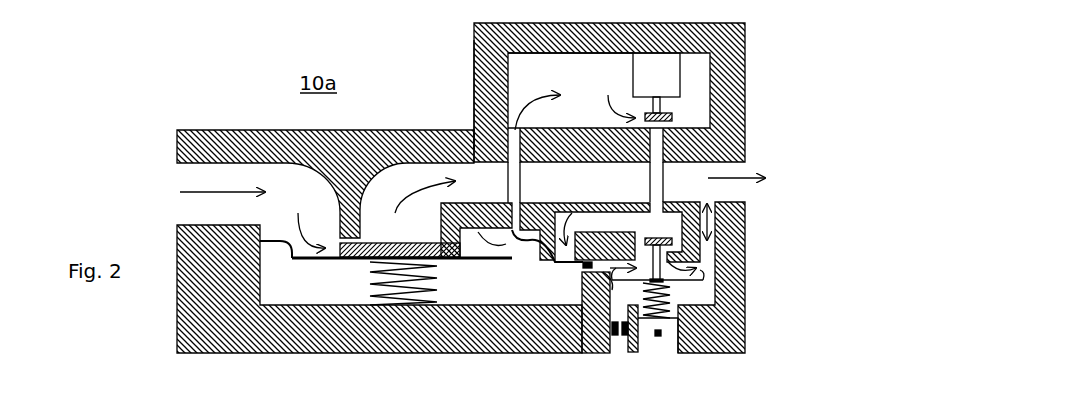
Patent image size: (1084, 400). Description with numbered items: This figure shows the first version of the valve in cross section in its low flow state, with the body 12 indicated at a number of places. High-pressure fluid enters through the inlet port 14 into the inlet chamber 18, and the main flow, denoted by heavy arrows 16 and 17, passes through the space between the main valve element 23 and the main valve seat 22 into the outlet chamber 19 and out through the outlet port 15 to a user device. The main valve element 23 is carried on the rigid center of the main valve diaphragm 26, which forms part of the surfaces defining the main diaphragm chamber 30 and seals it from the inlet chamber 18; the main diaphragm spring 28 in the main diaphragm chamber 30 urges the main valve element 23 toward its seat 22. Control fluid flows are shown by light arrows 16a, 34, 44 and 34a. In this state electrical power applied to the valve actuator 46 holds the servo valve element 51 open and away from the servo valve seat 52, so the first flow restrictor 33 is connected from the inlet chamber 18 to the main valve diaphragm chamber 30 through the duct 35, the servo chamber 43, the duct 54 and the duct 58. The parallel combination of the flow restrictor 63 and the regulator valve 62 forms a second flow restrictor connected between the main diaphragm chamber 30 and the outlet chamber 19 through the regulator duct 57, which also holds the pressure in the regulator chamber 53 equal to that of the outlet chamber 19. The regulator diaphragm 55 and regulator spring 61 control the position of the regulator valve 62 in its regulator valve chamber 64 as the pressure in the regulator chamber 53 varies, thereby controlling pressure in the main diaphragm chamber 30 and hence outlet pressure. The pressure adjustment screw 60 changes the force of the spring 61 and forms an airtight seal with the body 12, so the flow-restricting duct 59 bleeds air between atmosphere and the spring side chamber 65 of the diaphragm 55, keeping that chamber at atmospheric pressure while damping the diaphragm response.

The body 12 is at (283, 137).
The inlet port 14 is at (183, 184).
The outlet port 15 is at (740, 193).
The heavy arrow 16 is at (200, 193).
The light arrow 16a is at (500, 252).
The heavy arrow 17 is at (410, 200).
The inlet chamber 18 is at (275, 173).
The outlet chamber 19 is at (410, 172).
The main valve seat 22 is at (440, 246).
The main valve element 23 is at (443, 262).
The main valve diaphragm 26 is at (475, 258).
The main diaphragm spring 28 is at (368, 277).
The main diaphragm chamber 30 is at (290, 300).
The first flow restrictor 33 is at (528, 210).
The flow symbol 34 is at (480, 56).
The flow symbol 34a is at (575, 211).
The duct 35 is at (507, 188).
The servo chamber 43 is at (585, 75).
The flow symbol 44 is at (605, 106).
The valve actuator 46 is at (665, 72).
The servo valve element 51 is at (668, 117).
The servo valve seat 52 is at (660, 128).
The regulator chamber 53 is at (733, 288).
The duct 54 is at (657, 168).
The regulator diaphragm 55 is at (737, 318).
The regulator duct 57 is at (680, 260).
The duct 58 is at (605, 211).
The flow-restricting duct 59 is at (621, 318).
The pressure adjustment screw 60 is at (672, 333).
The regulator spring 61 is at (700, 328).
The regulator valve 62 is at (701, 262).
The flow restrictor 63 is at (592, 306).
The regulator valve chamber 64 is at (663, 228).
The spring side chamber 65 is at (640, 297).